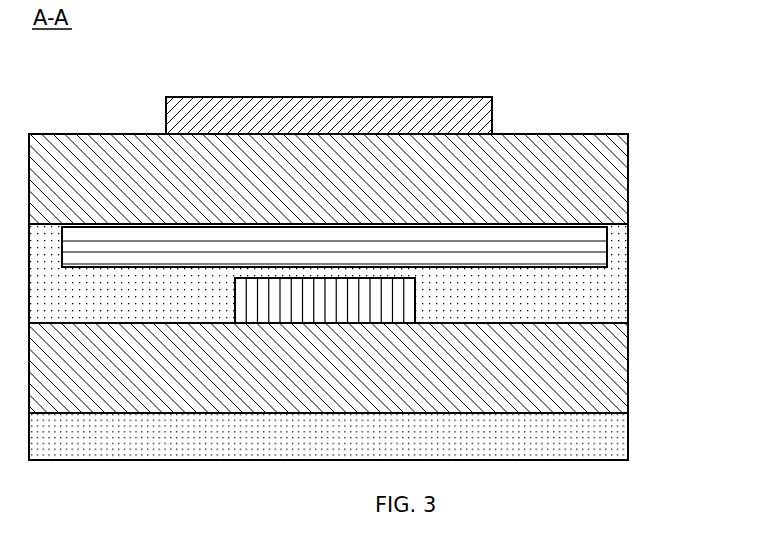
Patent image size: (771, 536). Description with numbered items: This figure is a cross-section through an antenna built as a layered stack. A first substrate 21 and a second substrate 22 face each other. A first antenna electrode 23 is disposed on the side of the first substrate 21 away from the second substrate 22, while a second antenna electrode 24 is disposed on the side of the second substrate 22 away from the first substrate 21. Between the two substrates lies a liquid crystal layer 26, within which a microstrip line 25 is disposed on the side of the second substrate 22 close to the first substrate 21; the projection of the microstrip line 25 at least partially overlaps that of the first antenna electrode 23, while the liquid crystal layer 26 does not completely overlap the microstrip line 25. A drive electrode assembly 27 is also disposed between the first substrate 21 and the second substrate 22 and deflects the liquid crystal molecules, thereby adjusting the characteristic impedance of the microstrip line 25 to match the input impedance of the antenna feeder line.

The first substrate 21 is at (601, 133).
The second substrate 22 is at (628, 382).
The first antenna electrode 23 is at (482, 97).
The second antenna electrode 24 is at (628, 442).
The microstrip line 25 is at (398, 296).
The liquid crystal layer 26 is at (593, 313).
The drive electrode assembly 27 is at (601, 252).